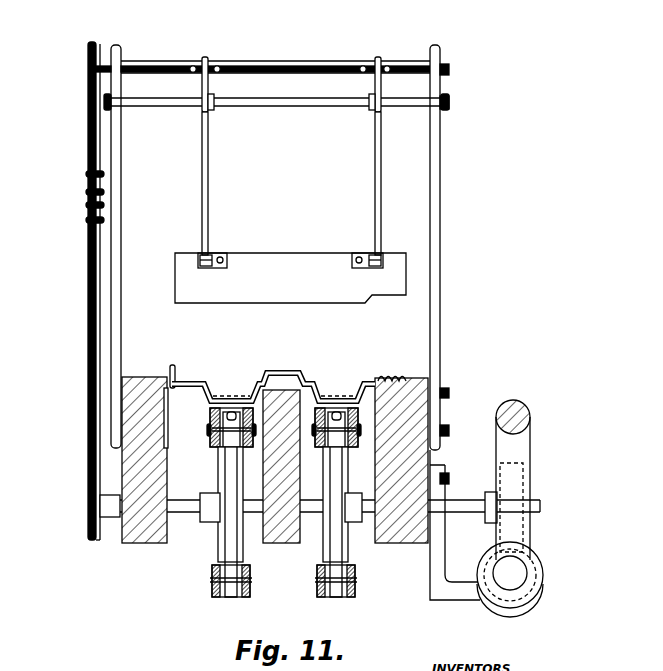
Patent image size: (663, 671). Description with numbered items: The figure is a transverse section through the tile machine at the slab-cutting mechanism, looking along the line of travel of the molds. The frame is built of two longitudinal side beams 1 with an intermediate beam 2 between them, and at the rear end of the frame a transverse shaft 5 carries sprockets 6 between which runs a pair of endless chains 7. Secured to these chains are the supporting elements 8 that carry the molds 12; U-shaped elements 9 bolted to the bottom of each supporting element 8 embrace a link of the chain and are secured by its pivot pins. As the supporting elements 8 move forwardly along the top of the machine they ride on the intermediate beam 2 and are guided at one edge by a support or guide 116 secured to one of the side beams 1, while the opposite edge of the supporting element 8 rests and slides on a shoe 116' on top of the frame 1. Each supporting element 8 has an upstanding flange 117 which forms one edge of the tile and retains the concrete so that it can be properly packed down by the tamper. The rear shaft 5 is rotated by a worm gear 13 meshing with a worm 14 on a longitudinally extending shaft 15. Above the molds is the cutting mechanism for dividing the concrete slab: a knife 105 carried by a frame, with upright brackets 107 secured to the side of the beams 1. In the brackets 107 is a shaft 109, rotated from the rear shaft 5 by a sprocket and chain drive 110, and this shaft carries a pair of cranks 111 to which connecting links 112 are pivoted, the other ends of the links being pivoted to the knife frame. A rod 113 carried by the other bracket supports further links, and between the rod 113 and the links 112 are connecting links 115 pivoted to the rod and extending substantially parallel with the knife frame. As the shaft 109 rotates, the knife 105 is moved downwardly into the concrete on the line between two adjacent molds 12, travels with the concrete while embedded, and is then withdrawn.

The longitudinal side beam 1 is at (130, 545).
The intermediate beam 2 is at (283, 545).
The rear transverse shaft 5 is at (186, 515).
The sprocket 6 is at (225, 548).
The endless chain 7 is at (215, 598).
The supporting element 8 is at (206, 394).
The U-shaped element 9 is at (212, 440).
The mold 12 is at (318, 385).
The worm gear 13 is at (522, 487).
The worm 14 is at (493, 605).
The longitudinally extending shaft 15 is at (525, 446).
The knife 105 is at (275, 253).
The upright bracket 107 is at (122, 196).
The shaft 109 is at (296, 61).
The sprocket and chain drive 110 is at (88, 260).
The crank 111 is at (210, 60).
The connecting link 112 is at (209, 172).
The rod 113 is at (172, 107).
The connecting link 115 is at (215, 100).
The support or guide 116 is at (181, 423).
The shoe 116' is at (406, 367).
The flange 117 is at (168, 377).